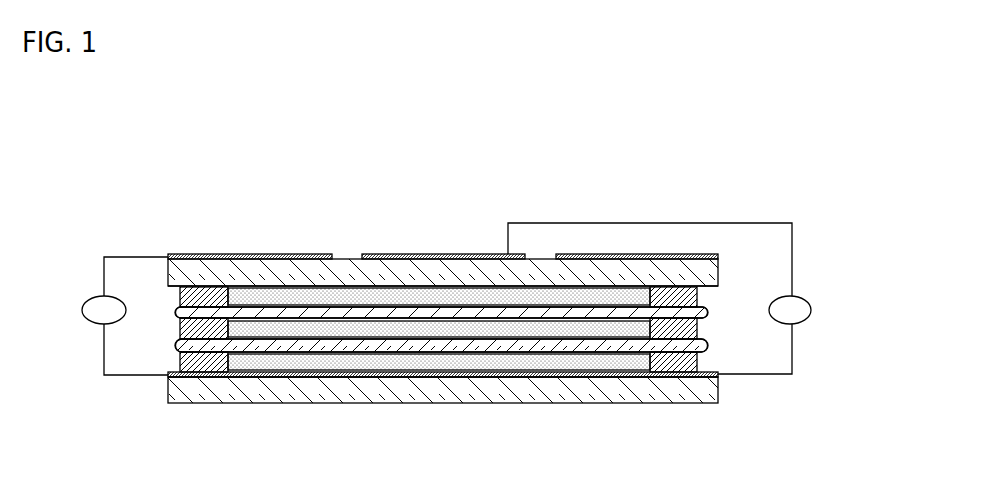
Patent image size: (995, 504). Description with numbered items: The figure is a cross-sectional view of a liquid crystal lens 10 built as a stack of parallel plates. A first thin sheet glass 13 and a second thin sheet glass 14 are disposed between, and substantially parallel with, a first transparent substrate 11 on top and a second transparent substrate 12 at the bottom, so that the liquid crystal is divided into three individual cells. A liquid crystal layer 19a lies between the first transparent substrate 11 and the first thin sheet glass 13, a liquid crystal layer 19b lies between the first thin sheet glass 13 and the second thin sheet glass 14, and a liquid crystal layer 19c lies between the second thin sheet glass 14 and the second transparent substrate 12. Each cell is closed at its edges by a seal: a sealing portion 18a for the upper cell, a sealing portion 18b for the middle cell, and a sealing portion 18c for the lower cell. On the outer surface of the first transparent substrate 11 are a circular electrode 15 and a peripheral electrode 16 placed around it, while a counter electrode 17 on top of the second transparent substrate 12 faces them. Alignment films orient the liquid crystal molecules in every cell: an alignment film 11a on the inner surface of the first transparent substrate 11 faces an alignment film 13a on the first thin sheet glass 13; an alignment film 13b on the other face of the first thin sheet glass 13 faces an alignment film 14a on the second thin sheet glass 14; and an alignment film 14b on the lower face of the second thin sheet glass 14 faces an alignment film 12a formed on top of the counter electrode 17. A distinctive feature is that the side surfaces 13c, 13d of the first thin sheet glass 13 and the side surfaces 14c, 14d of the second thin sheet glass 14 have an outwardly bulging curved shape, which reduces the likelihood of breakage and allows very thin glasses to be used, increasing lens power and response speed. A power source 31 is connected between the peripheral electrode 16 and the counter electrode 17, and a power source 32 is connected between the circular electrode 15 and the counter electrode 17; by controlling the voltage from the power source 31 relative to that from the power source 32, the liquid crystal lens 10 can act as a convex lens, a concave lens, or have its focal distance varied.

The liquid crystal lens 10 is at (724, 159).
The first transparent substrate 11 is at (348, 268).
The alignment film 11a is at (430, 290).
The second transparent substrate 12 is at (465, 397).
The alignment film 12a is at (288, 380).
The first thin sheet glass 13 is at (340, 313).
The alignment film 13a is at (310, 305).
The alignment film 13b is at (385, 322).
The side surface 13c is at (175, 313).
The side surface 13d is at (708, 312).
The second thin sheet glass 14 is at (548, 345).
The alignment film 14a is at (508, 339).
The alignment film 14b is at (585, 352).
The side surface 14c is at (175, 348).
The side surface 14d is at (708, 345).
The circular electrode 15 is at (475, 254).
The peripheral electrode 16 is at (245, 254).
The counter electrode 17 is at (252, 377).
The sealing portion 18a is at (180, 297).
The sealing portion 18b is at (180, 328).
The sealing portion 18c is at (180, 365).
The liquid crystal layer 19a is at (650, 298).
The liquid crystal layer 19b is at (422, 330).
The liquid crystal layer 19c is at (215, 373).
The power source 31 is at (82, 303).
The power source 32 is at (812, 310).